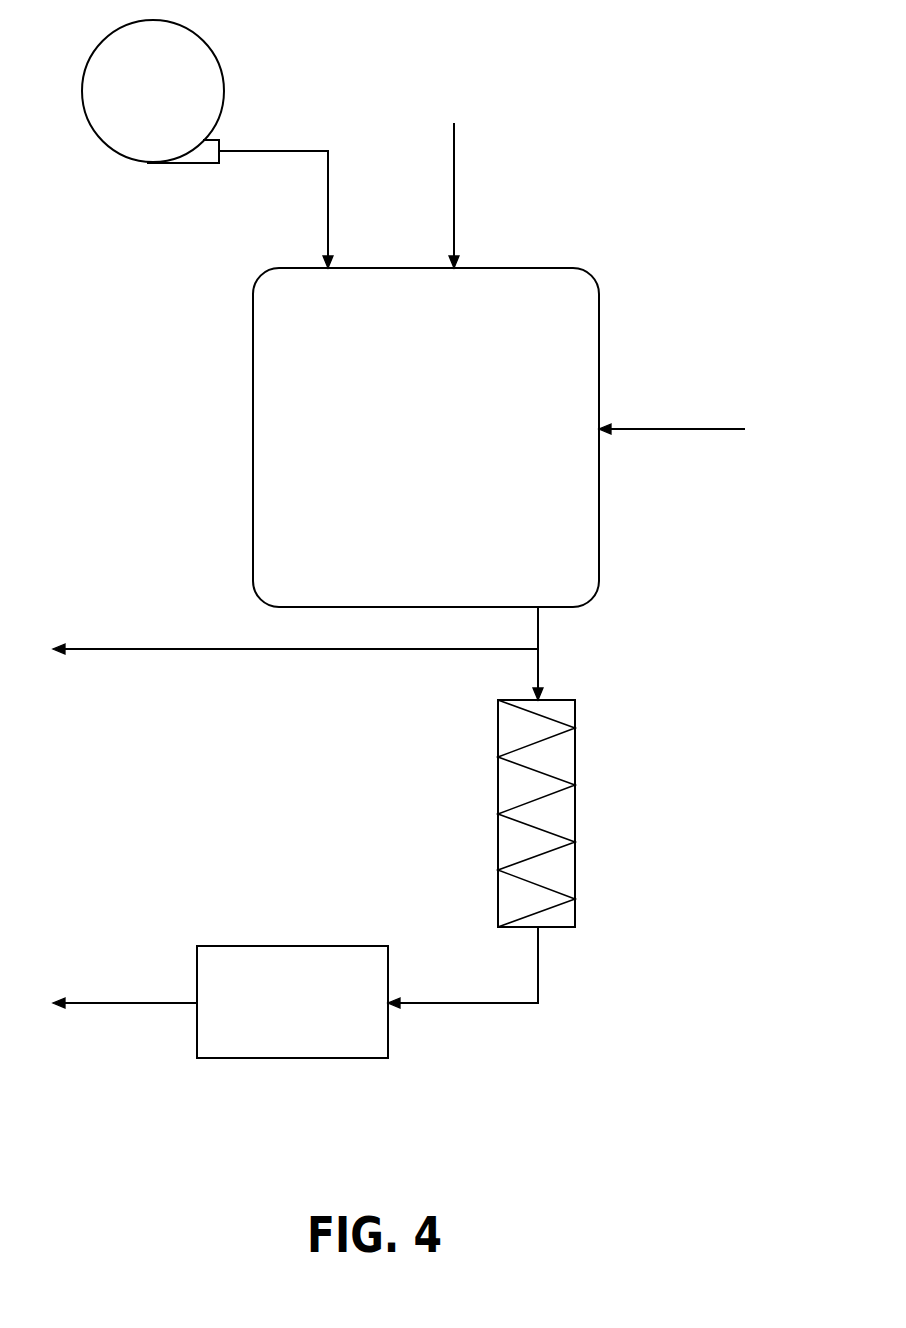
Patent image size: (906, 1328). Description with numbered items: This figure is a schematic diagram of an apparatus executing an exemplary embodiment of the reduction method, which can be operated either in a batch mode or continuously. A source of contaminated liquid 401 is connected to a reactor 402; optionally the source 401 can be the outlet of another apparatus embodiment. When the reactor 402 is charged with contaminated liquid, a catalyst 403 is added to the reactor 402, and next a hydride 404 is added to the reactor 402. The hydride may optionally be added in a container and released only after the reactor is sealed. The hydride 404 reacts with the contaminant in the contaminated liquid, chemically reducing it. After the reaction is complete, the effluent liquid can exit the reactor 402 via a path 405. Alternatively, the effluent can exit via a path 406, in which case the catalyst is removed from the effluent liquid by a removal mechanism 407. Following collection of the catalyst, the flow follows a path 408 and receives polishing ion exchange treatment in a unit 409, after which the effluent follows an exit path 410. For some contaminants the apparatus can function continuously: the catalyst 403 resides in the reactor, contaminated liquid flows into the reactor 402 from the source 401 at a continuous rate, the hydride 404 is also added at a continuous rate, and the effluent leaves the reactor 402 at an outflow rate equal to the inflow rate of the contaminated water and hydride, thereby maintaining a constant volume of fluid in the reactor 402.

The source of contaminated liquid 401 is at (210, 47).
The reactor 402 is at (595, 277).
The catalyst 403 is at (498, 97).
The hydride 404 is at (713, 387).
The path 405 is at (134, 650).
The path 406 is at (538, 675).
The removal mechanism 407 is at (575, 817).
The path 408 is at (538, 984).
The unit 409 is at (268, 946).
The exit path 410 is at (95, 1003).